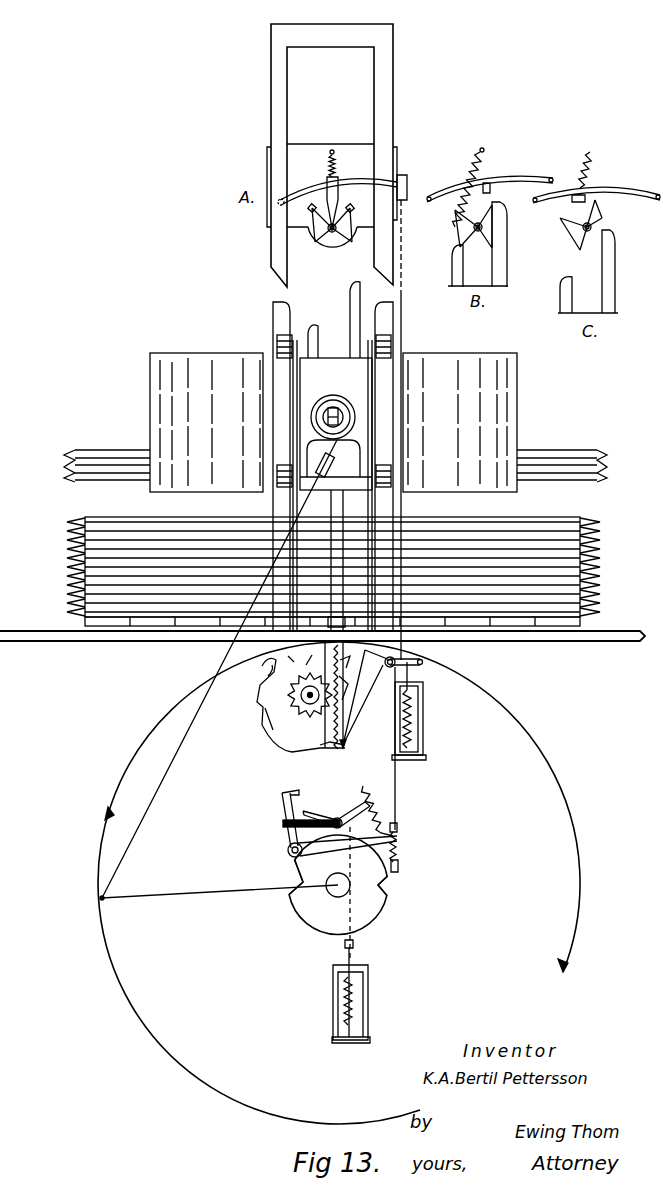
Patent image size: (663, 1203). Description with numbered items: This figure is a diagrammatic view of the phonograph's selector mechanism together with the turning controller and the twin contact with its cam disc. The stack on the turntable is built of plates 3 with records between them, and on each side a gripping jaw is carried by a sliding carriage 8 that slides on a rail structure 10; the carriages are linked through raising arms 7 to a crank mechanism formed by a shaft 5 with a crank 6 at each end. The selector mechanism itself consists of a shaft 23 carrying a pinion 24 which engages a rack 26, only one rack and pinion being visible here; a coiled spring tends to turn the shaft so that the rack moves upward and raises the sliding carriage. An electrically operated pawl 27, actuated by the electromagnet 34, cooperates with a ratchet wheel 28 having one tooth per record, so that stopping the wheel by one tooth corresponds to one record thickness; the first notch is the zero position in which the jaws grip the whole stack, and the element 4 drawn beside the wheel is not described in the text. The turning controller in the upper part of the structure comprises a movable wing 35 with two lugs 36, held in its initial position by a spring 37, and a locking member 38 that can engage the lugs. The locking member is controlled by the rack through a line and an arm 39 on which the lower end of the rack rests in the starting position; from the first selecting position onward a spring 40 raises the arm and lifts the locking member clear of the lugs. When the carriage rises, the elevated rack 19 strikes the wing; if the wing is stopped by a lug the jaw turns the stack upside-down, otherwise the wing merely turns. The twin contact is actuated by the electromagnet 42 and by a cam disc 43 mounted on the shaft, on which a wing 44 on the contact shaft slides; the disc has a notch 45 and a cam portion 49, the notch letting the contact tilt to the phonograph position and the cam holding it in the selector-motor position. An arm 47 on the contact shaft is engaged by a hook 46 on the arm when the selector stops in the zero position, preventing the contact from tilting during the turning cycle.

The plates 3 is at (288, 661).
The ratchet tooth 4 is at (308, 658).
The shaft 5 is at (333, 894).
The crank 6 is at (348, 670).
The raising arm 7 is at (349, 688).
The sliding carriage 8 is at (357, 714).
The rail structure 10 is at (328, 744).
The rack 19 is at (315, 337).
The shaft 23 is at (301, 698).
The pinion 24 is at (262, 685).
The rack 26 is at (345, 746).
The pawl 27 is at (373, 700).
The ratchet wheel 28 is at (284, 737).
The electromagnet 34 is at (468, 740).
The wing 35 is at (321, 232).
The lugs 36 is at (351, 207).
The spring 37 is at (333, 150).
The locking member 38 is at (303, 195).
The arm 39 is at (291, 855).
The spring 40 is at (368, 786).
The electromagnet 42 is at (363, 977).
The cam disc 43 is at (377, 907).
The wing 44 is at (371, 812).
The notch 45 is at (297, 888).
The hook 46 is at (284, 826).
The arm 47 is at (306, 812).
The cam portion 49 is at (393, 893).